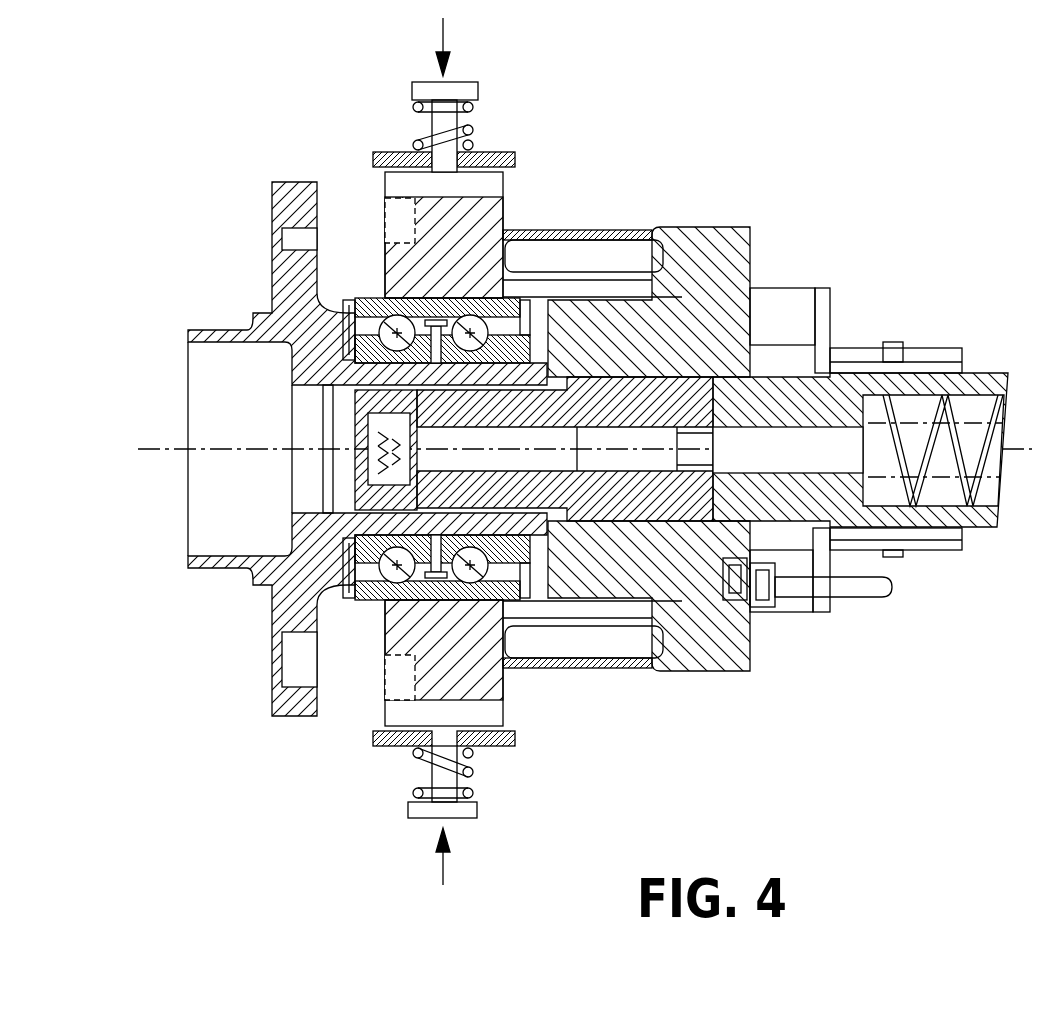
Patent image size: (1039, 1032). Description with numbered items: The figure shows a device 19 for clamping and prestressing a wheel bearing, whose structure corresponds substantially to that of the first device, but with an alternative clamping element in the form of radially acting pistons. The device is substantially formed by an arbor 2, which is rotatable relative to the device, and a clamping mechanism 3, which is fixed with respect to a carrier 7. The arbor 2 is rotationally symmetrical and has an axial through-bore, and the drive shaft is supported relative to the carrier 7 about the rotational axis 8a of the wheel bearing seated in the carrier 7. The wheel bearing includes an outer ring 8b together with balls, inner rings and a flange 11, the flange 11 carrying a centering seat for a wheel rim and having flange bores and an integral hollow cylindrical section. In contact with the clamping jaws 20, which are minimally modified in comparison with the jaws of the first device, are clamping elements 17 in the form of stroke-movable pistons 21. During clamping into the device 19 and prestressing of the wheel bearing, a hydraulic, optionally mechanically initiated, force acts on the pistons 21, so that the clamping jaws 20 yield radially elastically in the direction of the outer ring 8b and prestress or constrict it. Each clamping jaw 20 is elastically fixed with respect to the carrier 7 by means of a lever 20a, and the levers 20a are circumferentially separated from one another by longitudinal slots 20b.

The arbor 2 is at (440, 500).
The clamping mechanism 3 is at (502, 421).
The carrier 7 is at (737, 256).
The rotational axis 8a is at (157, 448).
The outer ring 8b is at (392, 302).
The flange 11 is at (290, 318).
The clamping elements 17 is at (491, 451).
The device 19 is at (858, 215).
The clamping jaws 20 is at (480, 215).
The lever 20a is at (597, 253).
The longitudinal slots 20b is at (682, 230).
The pistons 21 is at (455, 90).